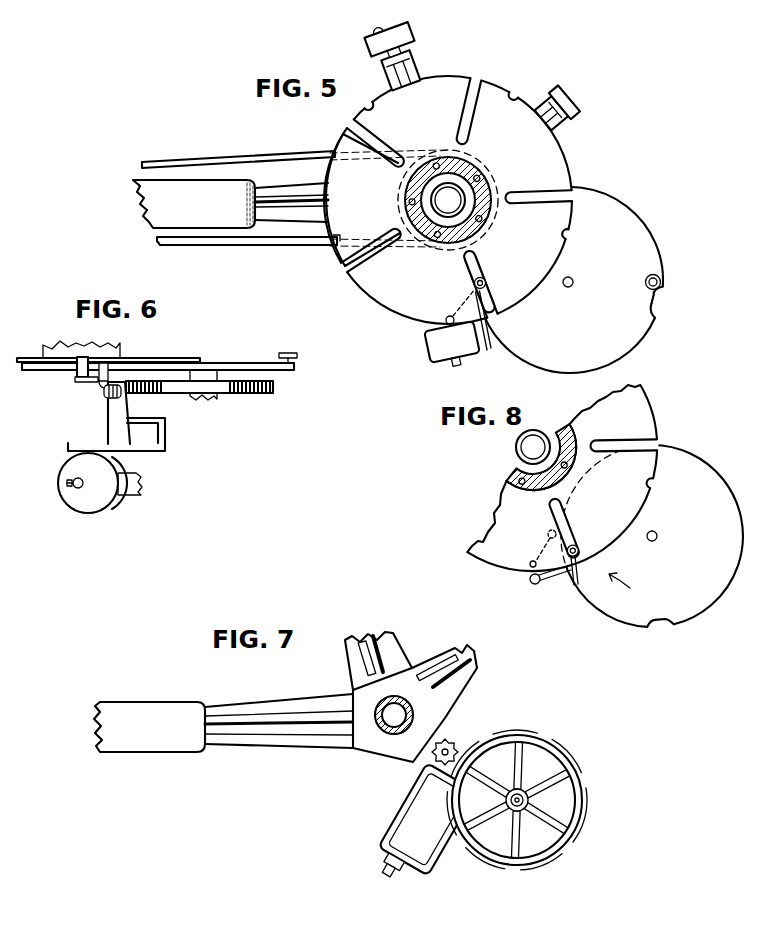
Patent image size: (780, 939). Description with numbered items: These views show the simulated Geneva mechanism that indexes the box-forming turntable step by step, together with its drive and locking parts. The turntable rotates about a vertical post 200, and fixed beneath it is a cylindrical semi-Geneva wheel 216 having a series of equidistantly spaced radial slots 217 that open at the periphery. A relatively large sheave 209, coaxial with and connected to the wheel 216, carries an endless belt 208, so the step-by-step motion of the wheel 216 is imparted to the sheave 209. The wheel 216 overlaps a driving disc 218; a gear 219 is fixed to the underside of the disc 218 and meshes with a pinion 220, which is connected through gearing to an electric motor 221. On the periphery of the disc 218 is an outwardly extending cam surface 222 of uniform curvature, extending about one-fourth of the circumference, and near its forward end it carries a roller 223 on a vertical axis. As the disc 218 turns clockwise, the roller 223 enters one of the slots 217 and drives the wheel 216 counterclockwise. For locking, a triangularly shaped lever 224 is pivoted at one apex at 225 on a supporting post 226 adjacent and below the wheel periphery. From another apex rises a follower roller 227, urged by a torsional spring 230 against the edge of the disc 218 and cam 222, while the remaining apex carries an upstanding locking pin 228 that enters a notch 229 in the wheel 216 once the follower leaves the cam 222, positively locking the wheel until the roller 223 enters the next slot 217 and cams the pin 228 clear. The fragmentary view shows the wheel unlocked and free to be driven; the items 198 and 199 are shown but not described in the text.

In FIG. 5, the handle 198 is at (223, 217).
In FIG. 7, the handle 198 is at (127, 743).
In FIG. 5, the arm 199 is at (288, 213).
In FIG. 7, the arm 199 is at (253, 735).
In FIG. 8, the vertical post 200 is at (537, 429).
In FIG. 7, the vertical post 200 is at (385, 732).
In FIG. 5, the endless belt 208 is at (293, 157).
In FIG. 5, the sheave 209 is at (492, 168).
In FIG. 5, the semi-Geneva wheel 216 is at (558, 165).
In FIG. 6, the semi-Geneva wheel 216 is at (170, 358).
In FIG. 8, the semi-Geneva wheel 216 is at (640, 417).
In FIG. 5, the slots 217 is at (480, 90).
In FIG. 8, the slots 217 is at (603, 443).
In FIG. 5, the driving disc 218 is at (635, 237).
In FIG. 6, the driving disc 218 is at (232, 365).
In FIG. 8, the driving disc 218 is at (717, 498).
In FIG. 6, the gear 219 is at (257, 393).
In FIG. 7, the gear 219 is at (515, 868).
In FIG. 7, the pinion 220 is at (455, 737).
In FIG. 6, the electric motor 221 is at (118, 502).
In FIG. 7, the electric motor 221 is at (420, 878).
In FIG. 5, the cam surface 222 is at (645, 263).
In FIG. 8, the cam surface 222 is at (620, 612).
In FIG. 5, the roller 223 is at (663, 293).
In FIG. 6, the roller 223 is at (297, 357).
In FIG. 8, the roller 223 is at (575, 588).
In FIG. 5, the triangularly shaped lever 224 is at (482, 305).
In FIG. 6, the triangularly shaped lever 224 is at (92, 383).
In FIG. 5, the pivot 225 is at (482, 312).
In FIG. 6, the supporting post 226 is at (118, 428).
In FIG. 5, the roller 227 is at (473, 283).
In FIG. 5, the locking pin 228 is at (448, 318).
In FIG. 6, the locking pin 228 is at (77, 372).
In FIG. 8, the locking pin 228 is at (532, 585).
In FIG. 6, the notch 229 is at (123, 358).
In FIG. 8, the notch 229 is at (531, 562).
In FIG. 6, the torsional spring 230 is at (106, 398).